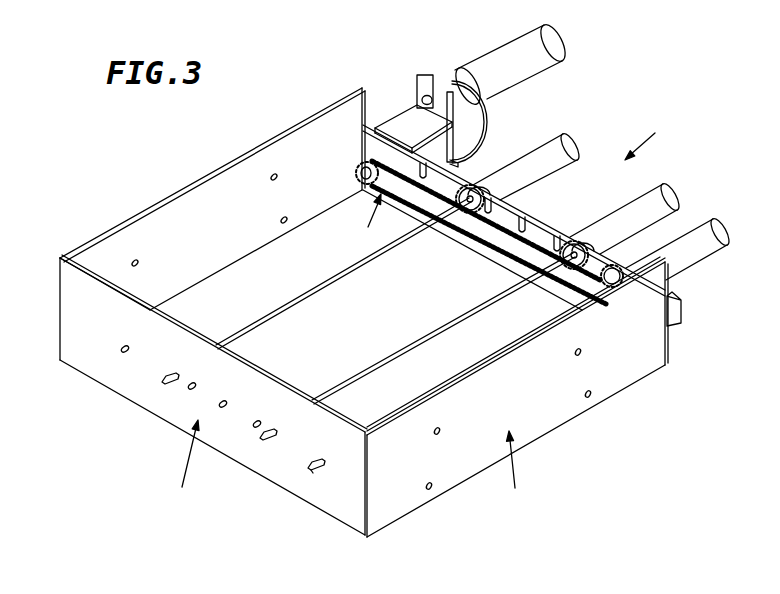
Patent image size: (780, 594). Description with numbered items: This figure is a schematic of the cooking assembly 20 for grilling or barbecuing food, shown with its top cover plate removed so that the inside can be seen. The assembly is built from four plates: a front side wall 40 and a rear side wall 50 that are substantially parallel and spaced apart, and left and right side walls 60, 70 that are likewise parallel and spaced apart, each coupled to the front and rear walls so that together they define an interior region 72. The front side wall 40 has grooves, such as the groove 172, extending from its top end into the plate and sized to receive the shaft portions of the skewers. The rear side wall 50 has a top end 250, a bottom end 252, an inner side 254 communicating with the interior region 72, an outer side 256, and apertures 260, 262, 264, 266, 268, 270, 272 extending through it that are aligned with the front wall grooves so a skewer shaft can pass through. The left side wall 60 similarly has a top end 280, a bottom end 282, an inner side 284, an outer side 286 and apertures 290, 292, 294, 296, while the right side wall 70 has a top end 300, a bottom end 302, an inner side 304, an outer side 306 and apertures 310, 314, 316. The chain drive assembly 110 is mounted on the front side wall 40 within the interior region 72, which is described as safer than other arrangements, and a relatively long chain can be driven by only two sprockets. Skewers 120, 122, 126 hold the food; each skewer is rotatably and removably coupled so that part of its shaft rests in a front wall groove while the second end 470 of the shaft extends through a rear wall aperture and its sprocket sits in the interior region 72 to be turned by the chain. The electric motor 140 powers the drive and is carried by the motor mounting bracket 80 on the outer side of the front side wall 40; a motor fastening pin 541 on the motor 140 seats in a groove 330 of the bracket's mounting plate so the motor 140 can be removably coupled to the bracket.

The cooking assembly 20 is at (392, 303).
The front side wall 40 is at (375, 140).
The rear side wall 50 is at (175, 459).
The left side wall 60 is at (526, 467).
The right side wall 70 is at (167, 212).
The interior region 72 is at (385, 339).
The motor mounting bracket 80 is at (407, 120).
The chain drive assembly 110 is at (476, 232).
The skewer 120 is at (710, 237).
The skewer 122 is at (657, 207).
The skewer 126 is at (567, 150).
The electric motor 140 is at (537, 48).
The groove 172 is at (483, 143).
The top end of rear side wall 250 is at (340, 420).
The bottom end of rear side wall 252 is at (345, 530).
The inner side of rear side wall 254 is at (117, 288).
The outer side of rear side wall 256 is at (82, 333).
The aperture 260 is at (323, 466).
The aperture 262 is at (263, 437).
The aperture 264 is at (257, 427).
The aperture 266 is at (225, 406).
The aperture 268 is at (192, 388).
The aperture 270 is at (173, 379).
The aperture 272 is at (125, 352).
The top end of left side wall 280 is at (540, 329).
The bottom end of left side wall 282 is at (547, 437).
The inner side of left side wall 284 is at (467, 373).
The outer side of left side wall 286 is at (390, 503).
The aperture 290 is at (438, 430).
The aperture 292 is at (430, 485).
The aperture 294 is at (580, 350).
The aperture 296 is at (590, 390).
The top end of right side wall 300 is at (317, 82).
The bottom end of right side wall 302 is at (263, 250).
The inner side of right side wall 304 is at (205, 175).
The outer side of right side wall 306 is at (223, 163).
The aperture 310 is at (140, 259).
The aperture 314 is at (278, 173).
The aperture 316 is at (286, 217).
The groove 330 is at (440, 79).
The second end of shaft 470 is at (306, 470).
The motor fastening pin 541 is at (423, 87).